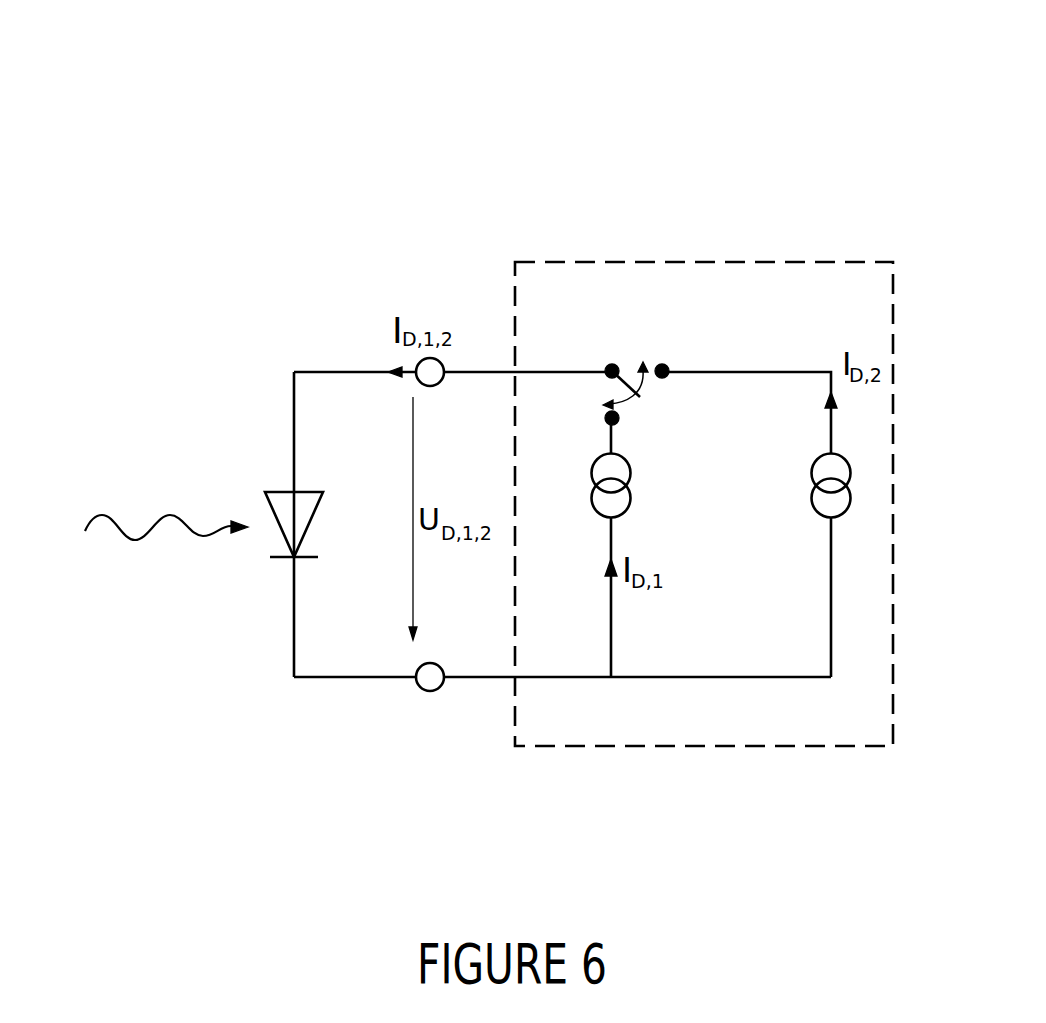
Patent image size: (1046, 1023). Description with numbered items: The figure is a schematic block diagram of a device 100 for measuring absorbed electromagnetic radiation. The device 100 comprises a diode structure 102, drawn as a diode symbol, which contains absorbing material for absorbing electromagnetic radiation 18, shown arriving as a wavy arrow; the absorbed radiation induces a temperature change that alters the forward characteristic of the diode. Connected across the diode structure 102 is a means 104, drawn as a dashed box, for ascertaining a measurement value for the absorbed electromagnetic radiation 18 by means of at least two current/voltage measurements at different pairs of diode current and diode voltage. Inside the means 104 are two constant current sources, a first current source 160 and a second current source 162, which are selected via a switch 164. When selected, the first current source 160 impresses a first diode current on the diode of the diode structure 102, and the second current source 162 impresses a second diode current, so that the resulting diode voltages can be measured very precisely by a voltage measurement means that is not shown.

The device 100 is at (738, 126).
The diode structure 102 is at (287, 492).
The electromagnetic radiation 18 is at (152, 551).
The means for ascertaining a measurement value 104 is at (815, 747).
The first current source 160 is at (632, 498).
The second current source 162 is at (822, 518).
The switch 164 is at (633, 350).